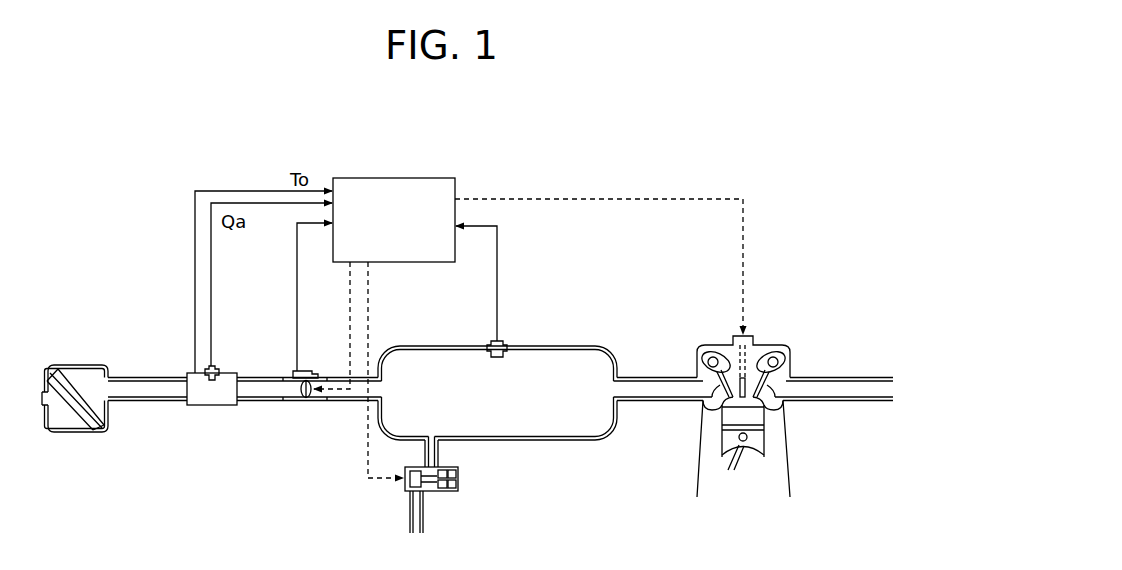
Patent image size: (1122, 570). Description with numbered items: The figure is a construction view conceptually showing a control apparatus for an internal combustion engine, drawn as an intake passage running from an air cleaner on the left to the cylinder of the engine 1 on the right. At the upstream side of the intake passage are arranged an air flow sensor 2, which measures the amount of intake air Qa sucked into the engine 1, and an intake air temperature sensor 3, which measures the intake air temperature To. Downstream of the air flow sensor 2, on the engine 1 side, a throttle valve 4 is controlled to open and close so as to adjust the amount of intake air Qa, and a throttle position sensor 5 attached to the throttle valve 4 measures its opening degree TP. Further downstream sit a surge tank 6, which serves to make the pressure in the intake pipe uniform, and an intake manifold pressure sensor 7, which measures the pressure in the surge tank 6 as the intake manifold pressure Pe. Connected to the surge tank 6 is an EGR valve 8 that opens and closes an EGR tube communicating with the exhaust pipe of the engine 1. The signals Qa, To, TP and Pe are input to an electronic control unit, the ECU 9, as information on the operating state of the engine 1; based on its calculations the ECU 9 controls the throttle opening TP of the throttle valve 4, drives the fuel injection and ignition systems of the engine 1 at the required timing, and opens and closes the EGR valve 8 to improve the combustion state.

The engine 1 is at (796, 310).
The air flow sensor 2 is at (216, 368).
The intake air temperature sensor 3 is at (211, 386).
The throttle valve 4 is at (308, 400).
The throttle position sensor 5 is at (305, 370).
The surge tank 6 is at (568, 443).
The intake manifold pressure sensor 7 is at (500, 341).
The EGR valve 8 is at (443, 497).
The electronic control unit (ECU) 9 is at (396, 178).